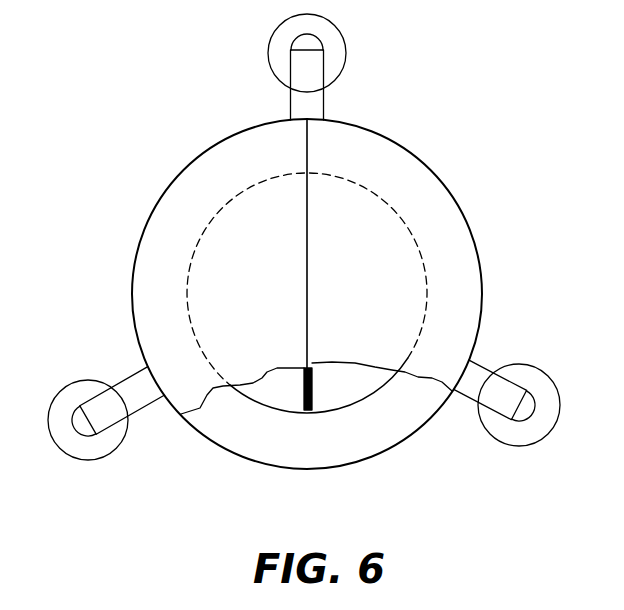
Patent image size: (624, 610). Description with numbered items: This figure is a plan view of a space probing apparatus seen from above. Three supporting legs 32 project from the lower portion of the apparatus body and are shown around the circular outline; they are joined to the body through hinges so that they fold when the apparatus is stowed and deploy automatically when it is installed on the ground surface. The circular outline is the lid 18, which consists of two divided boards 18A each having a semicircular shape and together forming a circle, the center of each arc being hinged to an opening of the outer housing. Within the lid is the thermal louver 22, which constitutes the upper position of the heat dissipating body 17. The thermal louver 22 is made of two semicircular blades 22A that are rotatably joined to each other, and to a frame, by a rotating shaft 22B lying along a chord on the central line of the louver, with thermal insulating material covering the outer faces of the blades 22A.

The lid 18 is at (411, 152).
The divided board 18A is at (175, 208).
The supporting leg 32 is at (298, 86).
The thermal louver 22 is at (307, 350).
The heat dissipating body 17 is at (285, 403).
The blade 22A is at (272, 387).
The rotating shaft 22B is at (312, 395).